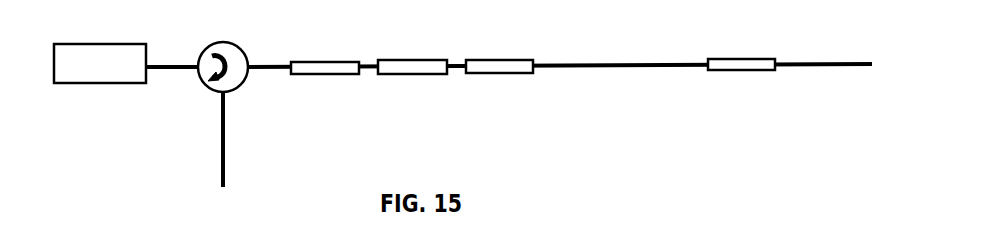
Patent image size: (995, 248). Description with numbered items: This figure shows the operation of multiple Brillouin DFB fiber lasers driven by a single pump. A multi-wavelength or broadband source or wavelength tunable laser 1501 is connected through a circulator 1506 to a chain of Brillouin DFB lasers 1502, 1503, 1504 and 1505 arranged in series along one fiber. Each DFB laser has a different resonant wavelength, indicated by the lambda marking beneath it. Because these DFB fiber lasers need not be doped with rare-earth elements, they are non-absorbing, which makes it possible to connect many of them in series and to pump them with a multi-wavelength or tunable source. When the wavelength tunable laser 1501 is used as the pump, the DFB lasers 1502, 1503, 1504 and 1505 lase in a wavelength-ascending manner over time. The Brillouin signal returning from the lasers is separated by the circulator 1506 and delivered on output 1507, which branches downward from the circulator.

The wavelength tunable laser 1501 is at (100, 48).
The Brillouin DFB laser 1502 is at (322, 68).
The Brillouin DFB laser 1503 is at (403, 69).
The Brillouin DFB laser 1504 is at (503, 68).
The Brillouin DFB laser 1505 is at (741, 65).
The circulator 1506 is at (225, 52).
The output 1507 is at (251, 139).